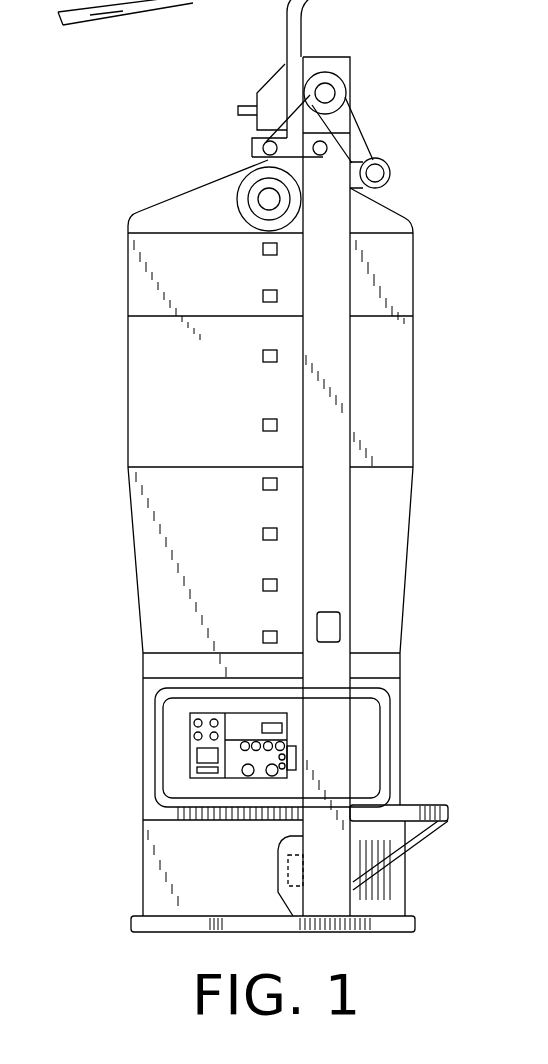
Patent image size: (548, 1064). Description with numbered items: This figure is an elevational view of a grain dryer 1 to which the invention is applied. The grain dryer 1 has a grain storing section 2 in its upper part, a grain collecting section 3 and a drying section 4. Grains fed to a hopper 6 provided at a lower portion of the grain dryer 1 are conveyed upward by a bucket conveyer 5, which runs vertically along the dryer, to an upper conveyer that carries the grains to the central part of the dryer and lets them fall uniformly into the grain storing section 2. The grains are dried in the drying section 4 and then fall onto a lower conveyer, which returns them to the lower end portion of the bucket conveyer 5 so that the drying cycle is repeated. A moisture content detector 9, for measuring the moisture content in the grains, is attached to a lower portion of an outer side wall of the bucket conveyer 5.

The grain dryer 1 is at (413, 347).
The grain storing section 2 is at (398, 412).
The grain collecting section 3 is at (152, 869).
The drying section 4 is at (395, 726).
The bucket conveyer 5 is at (340, 557).
The hopper 6 is at (417, 843).
The moisture content detector 9 is at (328, 630).